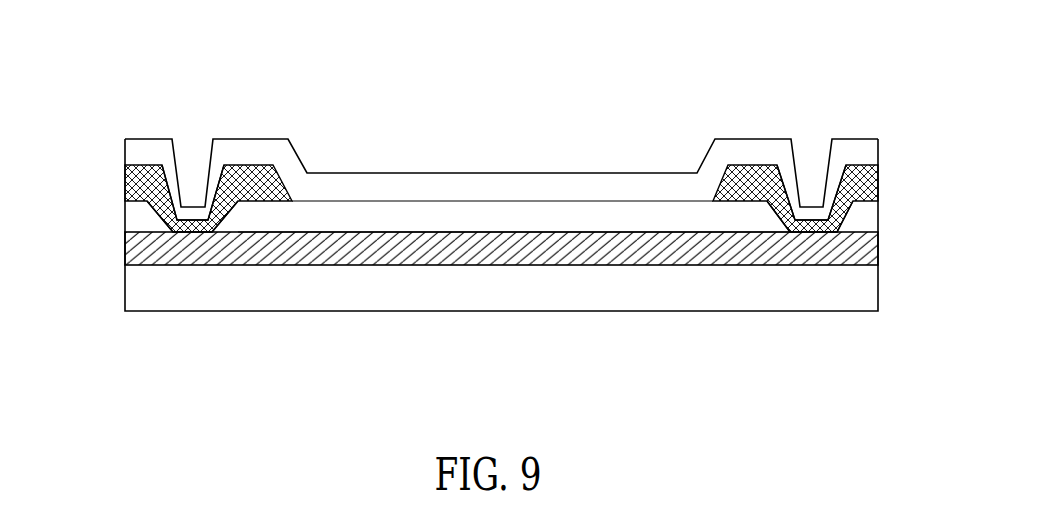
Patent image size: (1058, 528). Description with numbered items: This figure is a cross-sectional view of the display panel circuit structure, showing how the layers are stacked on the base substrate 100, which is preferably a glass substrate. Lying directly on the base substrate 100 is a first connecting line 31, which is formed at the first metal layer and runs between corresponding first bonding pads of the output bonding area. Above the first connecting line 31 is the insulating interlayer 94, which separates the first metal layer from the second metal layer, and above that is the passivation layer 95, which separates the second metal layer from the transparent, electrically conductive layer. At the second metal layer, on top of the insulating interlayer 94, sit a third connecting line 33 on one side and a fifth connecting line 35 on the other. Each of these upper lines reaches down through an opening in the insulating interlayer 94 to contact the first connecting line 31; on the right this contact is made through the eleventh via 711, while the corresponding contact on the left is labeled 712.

The base substrate 100 is at (708, 287).
The first connecting line 31 is at (530, 247).
The insulating interlayer 94 is at (428, 218).
The passivation layer 95 is at (545, 185).
The third connecting line 33 is at (245, 173).
The fifth connecting line 35 is at (745, 173).
The first via hole contact 712 is at (152, 221).
The eleventh via 711 is at (847, 218).